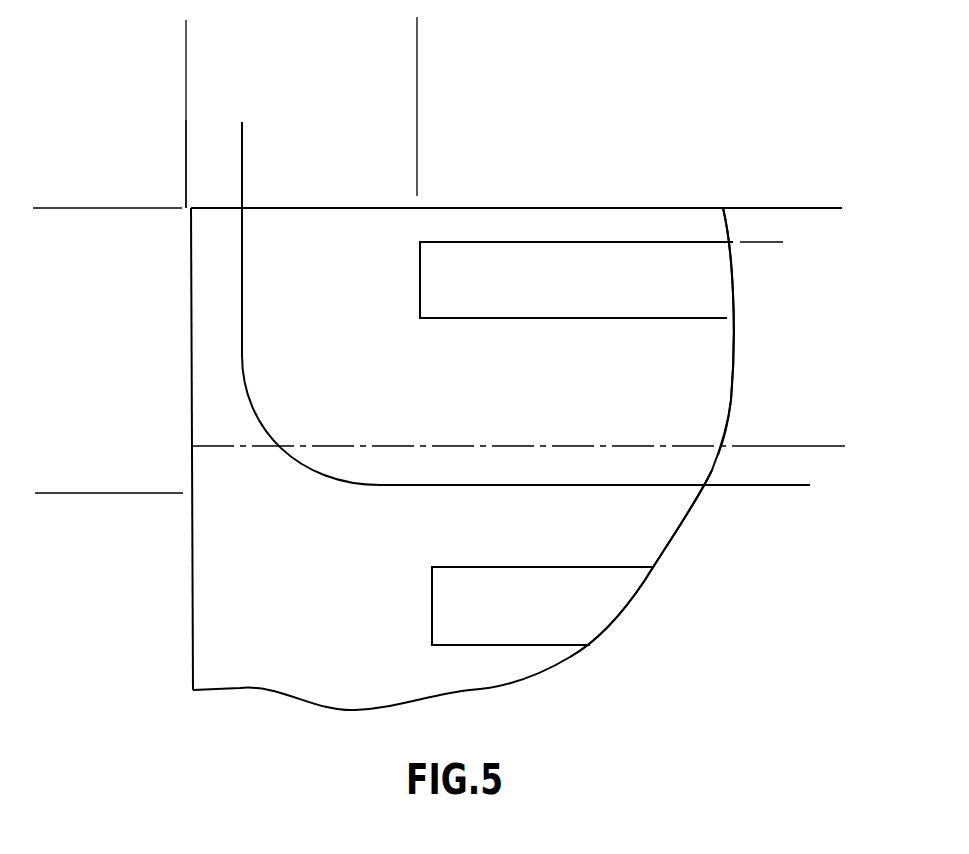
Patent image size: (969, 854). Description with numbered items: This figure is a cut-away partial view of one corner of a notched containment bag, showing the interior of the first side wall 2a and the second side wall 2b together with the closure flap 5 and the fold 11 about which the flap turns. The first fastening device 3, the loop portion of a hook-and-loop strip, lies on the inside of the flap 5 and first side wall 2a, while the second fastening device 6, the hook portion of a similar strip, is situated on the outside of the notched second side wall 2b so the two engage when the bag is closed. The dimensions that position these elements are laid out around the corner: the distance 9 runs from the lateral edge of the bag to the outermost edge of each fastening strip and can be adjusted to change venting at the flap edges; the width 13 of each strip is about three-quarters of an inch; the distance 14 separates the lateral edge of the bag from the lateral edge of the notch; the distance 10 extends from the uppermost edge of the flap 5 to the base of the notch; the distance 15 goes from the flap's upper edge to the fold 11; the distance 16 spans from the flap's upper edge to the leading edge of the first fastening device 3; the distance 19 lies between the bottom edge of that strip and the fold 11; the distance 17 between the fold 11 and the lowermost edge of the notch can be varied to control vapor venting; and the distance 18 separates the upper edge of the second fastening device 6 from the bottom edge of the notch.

The first side wall 2a is at (685, 423).
The second side wall 2b is at (632, 518).
The first fastening device 3 is at (487, 256).
The flap 5 is at (683, 205).
The second fastening device 6 is at (604, 599).
The distance from lateral edge of bag to outermost edge of fastening device 9 is at (417, 33).
The distance between uppermost edge of flap and base of notch 10 is at (45, 208).
The fold 11 is at (545, 440).
The width of fastening strip 13 is at (453, 242).
The distance between lateral edge of bag and lateral edge of notch 14 is at (295, 132).
The distance between uppermost edge of flap and fold 15 is at (837, 208).
The distance between uppermost edge of flap and leading edge of fastening strip 16 is at (763, 300).
The distance between fold and lowermost edge of notch 17 is at (799, 560).
The distance between uppermost edge of second fastening strip and bottom edge of not 18 is at (520, 485).
The distance between bottommost edge of first fastening strip and fold 19 is at (485, 318).